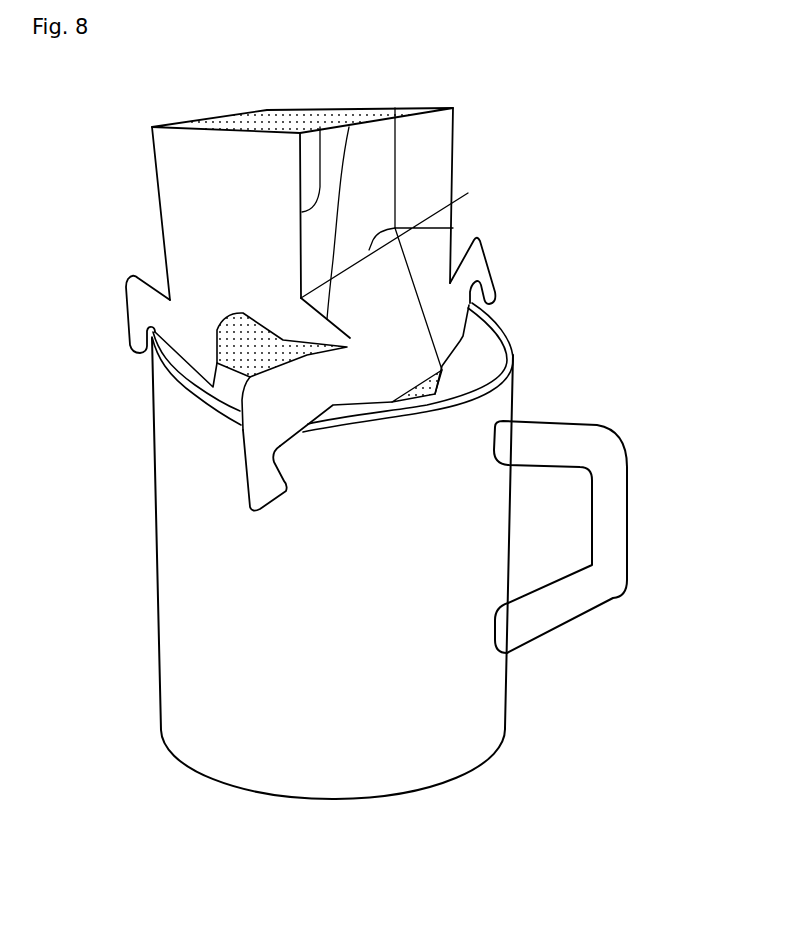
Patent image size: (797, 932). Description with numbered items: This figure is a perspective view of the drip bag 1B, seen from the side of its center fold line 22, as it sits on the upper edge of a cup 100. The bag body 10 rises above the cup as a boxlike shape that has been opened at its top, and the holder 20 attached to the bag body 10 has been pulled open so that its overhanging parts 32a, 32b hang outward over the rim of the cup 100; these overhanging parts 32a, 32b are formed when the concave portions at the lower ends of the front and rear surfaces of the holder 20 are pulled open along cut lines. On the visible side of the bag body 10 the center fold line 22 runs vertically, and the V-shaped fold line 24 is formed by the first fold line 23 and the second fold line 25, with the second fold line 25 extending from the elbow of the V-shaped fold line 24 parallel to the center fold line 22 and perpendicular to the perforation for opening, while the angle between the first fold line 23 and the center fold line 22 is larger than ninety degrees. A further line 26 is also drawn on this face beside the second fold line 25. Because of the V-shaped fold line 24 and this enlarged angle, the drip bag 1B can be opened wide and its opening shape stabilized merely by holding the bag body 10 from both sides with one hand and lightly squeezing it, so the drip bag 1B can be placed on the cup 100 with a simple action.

The drip bag 1B is at (98, 125).
The bag body 10 is at (203, 126).
The holder 20 is at (180, 211).
The center fold line 22 is at (397, 157).
The first fold line 23 is at (413, 227).
The V-shaped fold line 24 is at (383, 73).
The second fold line 25 is at (320, 127).
The cut line 26 is at (349, 127).
The overhanging part 32a is at (262, 458).
The overhanging part 32b is at (140, 306).
The cup 100 is at (155, 598).